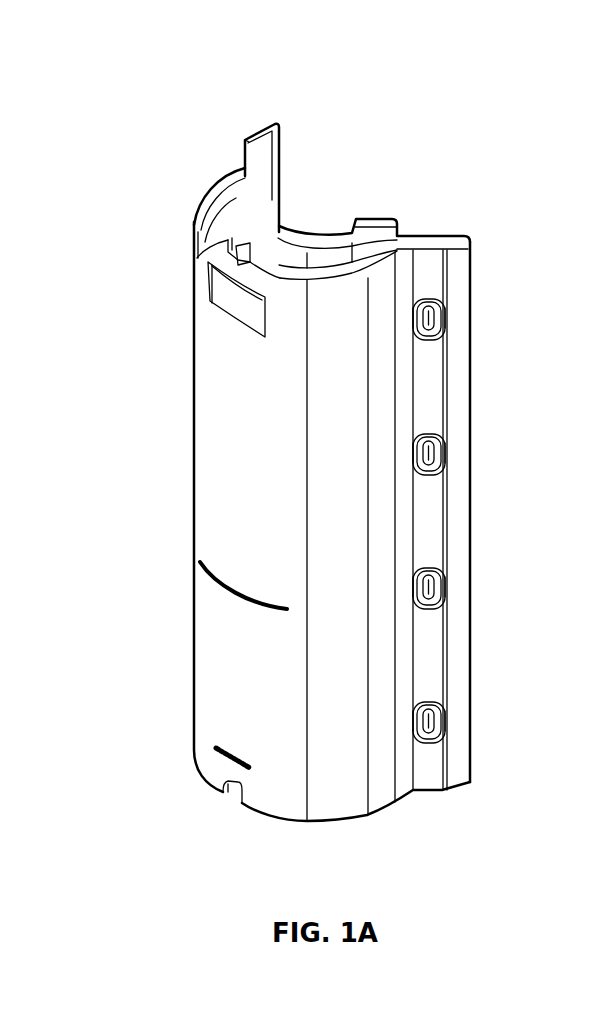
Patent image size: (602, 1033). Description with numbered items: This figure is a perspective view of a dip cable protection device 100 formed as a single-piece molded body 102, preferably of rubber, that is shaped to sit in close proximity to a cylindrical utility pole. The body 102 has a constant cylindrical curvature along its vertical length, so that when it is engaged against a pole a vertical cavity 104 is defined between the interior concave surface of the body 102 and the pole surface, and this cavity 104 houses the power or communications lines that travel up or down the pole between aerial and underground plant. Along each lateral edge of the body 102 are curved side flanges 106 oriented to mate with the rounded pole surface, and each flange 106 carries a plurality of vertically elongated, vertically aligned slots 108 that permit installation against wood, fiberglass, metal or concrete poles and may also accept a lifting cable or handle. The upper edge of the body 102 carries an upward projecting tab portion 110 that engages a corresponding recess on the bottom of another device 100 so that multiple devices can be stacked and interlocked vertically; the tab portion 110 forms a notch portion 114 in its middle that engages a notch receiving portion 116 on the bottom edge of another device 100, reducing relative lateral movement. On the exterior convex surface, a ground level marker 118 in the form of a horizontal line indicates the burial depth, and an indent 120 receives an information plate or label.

The dip cable protection device 100 is at (376, 116).
The molded body 102 is at (228, 683).
The vertical cavity 104 is at (308, 211).
The side flanges 106 is at (285, 141).
The slots 108 is at (451, 325).
The tab portion 110 is at (212, 186).
The notch portion 114 is at (216, 246).
The notch receiving portion 116 is at (223, 801).
The ground level marker 118 is at (223, 575).
The indent 120 is at (231, 307).